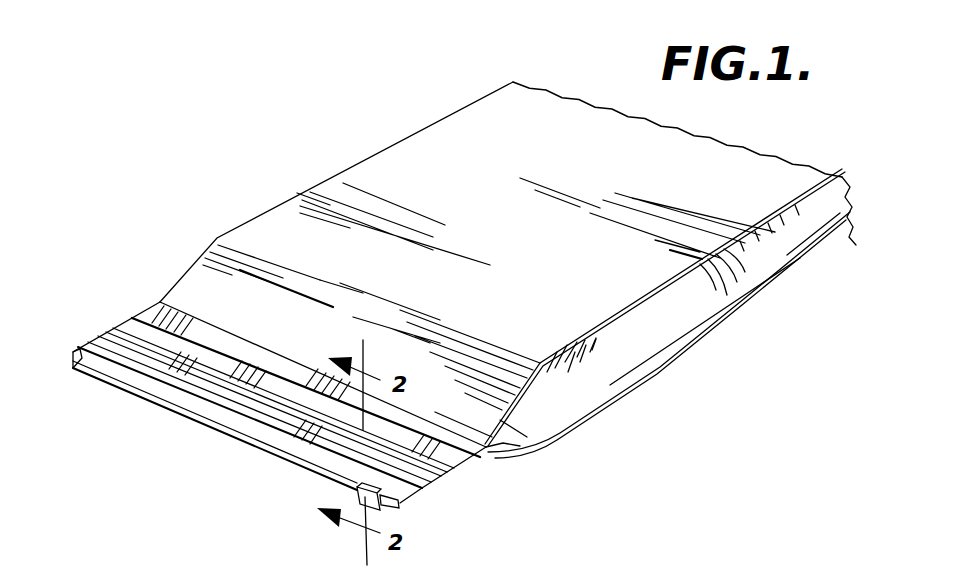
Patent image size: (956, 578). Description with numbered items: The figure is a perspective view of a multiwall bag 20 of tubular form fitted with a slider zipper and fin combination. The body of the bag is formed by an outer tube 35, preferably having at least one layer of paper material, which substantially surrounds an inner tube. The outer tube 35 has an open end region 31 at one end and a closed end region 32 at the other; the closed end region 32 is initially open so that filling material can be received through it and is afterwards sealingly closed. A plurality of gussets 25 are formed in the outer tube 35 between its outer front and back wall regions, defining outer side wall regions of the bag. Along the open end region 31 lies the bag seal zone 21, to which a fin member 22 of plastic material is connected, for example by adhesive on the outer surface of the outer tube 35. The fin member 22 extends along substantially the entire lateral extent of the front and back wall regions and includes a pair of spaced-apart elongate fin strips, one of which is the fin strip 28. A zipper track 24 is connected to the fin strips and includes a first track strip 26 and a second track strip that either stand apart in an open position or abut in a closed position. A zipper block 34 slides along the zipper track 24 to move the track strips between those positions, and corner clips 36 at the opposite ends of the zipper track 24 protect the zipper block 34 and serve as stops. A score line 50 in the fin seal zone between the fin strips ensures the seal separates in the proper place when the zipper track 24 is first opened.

The multiwall bag 20 is at (183, 222).
The bag seal zone 21 is at (399, 449).
The fin member 22 is at (437, 458).
The zipper track 24 is at (227, 430).
The gussets 25 is at (503, 443).
The first track strip 26 is at (396, 506).
The elongate fin strip 28 is at (722, 577).
The open end region 31 is at (148, 292).
The closed end region 32 is at (594, 100).
The zipper block 34 is at (358, 497).
The outer tube 35 is at (413, 163).
The corner clips 36 is at (72, 362).
The score line 50 is at (157, 378).